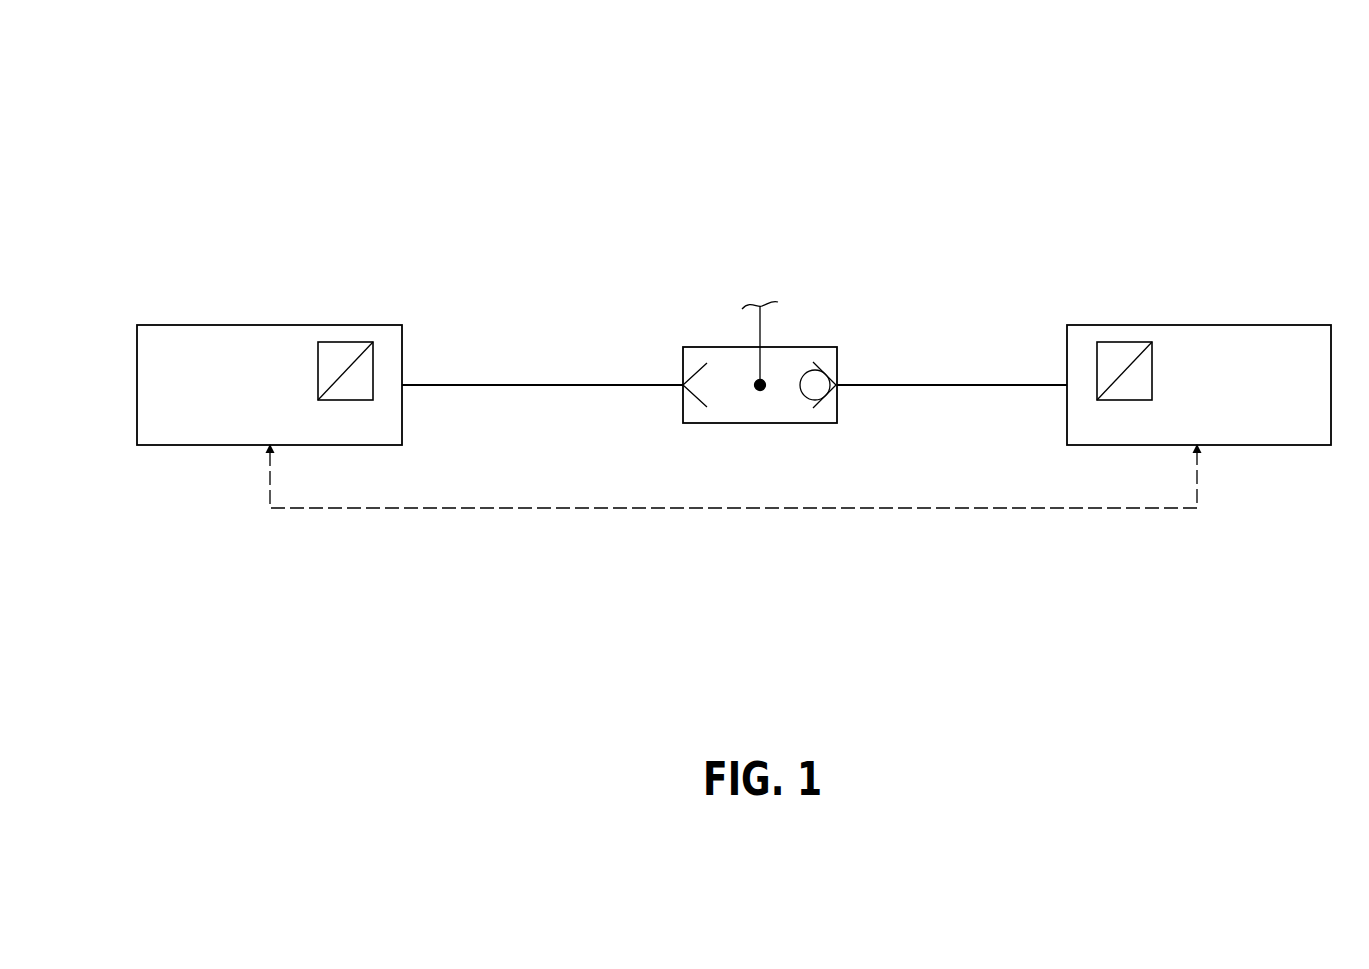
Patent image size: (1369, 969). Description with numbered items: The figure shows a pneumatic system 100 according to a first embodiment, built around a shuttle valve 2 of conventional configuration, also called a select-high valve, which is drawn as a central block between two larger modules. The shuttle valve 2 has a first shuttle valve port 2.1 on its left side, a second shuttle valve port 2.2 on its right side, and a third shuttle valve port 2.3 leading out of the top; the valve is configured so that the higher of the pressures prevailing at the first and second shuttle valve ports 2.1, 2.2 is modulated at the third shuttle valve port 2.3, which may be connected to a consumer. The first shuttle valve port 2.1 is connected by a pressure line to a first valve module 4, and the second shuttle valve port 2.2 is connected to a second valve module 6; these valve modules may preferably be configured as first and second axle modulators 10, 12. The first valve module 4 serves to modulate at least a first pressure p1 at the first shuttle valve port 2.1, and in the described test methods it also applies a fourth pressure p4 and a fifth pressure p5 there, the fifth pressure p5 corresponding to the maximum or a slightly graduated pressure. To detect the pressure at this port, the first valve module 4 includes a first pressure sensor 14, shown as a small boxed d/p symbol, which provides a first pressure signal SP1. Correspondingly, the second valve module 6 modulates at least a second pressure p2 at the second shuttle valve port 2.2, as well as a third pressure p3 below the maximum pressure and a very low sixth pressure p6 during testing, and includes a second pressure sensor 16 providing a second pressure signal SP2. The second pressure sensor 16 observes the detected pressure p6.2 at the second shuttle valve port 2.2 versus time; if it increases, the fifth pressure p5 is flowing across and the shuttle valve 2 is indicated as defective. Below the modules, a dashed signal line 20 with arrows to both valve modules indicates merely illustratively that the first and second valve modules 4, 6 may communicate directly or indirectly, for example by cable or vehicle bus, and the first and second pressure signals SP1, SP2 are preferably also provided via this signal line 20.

The pneumatic system 100 is at (233, 153).
The first valve module 4 is at (269, 346).
The first axle modulator 10 is at (207, 325).
The first pressure sensor 14 is at (305, 324).
The first pressure signal SP1 is at (341, 342).
The shuttle valve 2 is at (736, 336).
The first shuttle valve port 2.1 is at (574, 328).
The first pressure p1 is at (574, 328).
The fourth pressure p4 is at (574, 328).
The fifth pressure p5 is at (683, 385).
The third shuttle valve port 2.3 is at (762, 347).
The second shuttle valve port 2.2 is at (915, 328).
The second pressure p2 is at (915, 328).
The third pressure p3 is at (915, 328).
The sixth pressure p6 is at (915, 328).
The detected pressure p6.2 is at (840, 385).
The second valve module 6 is at (1200, 346).
The second axle modulator 12 is at (1260, 325).
The second pressure sensor 16 is at (1165, 324).
The second pressure signal SP2 is at (1125, 342).
The signal line 20 is at (763, 508).